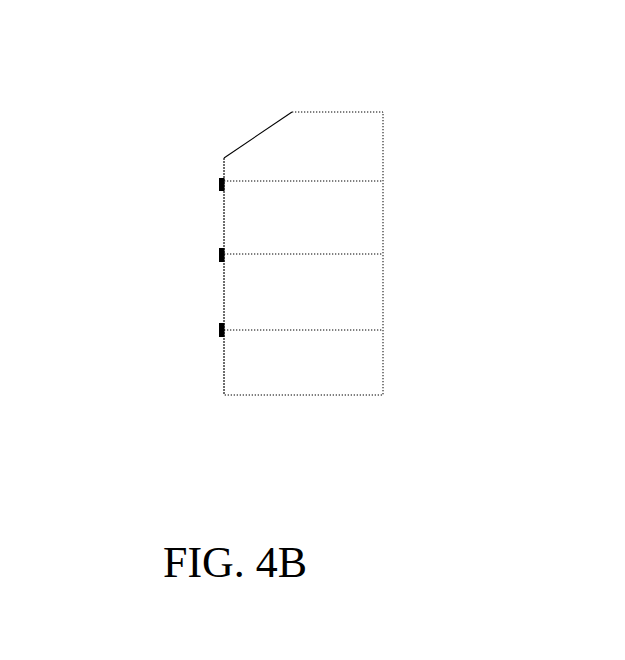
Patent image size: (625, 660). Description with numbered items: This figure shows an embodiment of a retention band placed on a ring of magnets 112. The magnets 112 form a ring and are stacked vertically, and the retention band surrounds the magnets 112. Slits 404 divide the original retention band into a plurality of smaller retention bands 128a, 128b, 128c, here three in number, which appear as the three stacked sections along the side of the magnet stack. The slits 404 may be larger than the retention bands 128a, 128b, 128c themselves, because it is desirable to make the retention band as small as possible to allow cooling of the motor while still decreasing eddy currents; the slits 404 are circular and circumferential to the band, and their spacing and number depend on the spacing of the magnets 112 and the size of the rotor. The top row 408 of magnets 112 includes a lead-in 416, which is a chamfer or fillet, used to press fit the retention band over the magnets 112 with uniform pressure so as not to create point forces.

The top row 408 is at (330, 92).
The lead-in 416 is at (245, 115).
The magnets 112 is at (368, 157).
The slits 404 is at (224, 218).
The retention band 128a is at (219, 181).
The retention band 128b is at (219, 256).
The retention band 128c is at (219, 330).